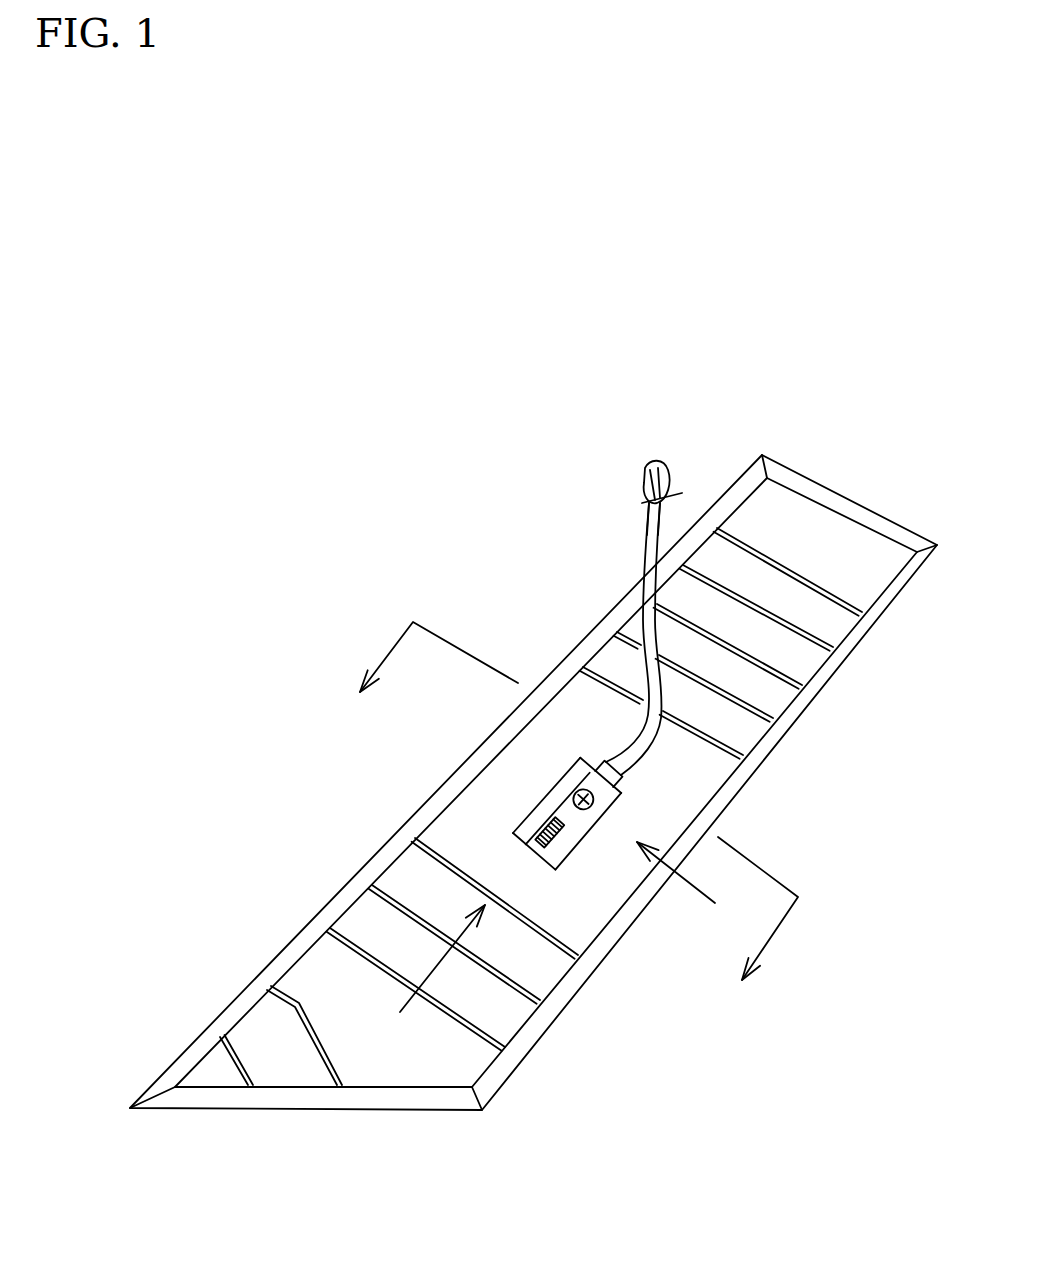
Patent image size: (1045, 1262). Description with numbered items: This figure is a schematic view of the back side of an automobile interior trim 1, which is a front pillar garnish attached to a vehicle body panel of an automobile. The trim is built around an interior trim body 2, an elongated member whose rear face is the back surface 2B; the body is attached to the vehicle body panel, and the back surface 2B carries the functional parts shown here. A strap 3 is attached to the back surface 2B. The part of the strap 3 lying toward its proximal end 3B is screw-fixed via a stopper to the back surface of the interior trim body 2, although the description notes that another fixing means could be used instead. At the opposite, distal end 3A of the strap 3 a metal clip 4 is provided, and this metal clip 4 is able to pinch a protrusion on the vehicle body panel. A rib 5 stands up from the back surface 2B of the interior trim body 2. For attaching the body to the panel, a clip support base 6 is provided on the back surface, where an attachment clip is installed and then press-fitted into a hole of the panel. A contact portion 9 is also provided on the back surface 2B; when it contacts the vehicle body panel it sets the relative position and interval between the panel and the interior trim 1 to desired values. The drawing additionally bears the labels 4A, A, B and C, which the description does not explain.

The automobile interior trim 1 is at (715, 380).
The interior trim body 2 is at (733, 802).
The back surface 2B is at (452, 823).
The strap 3 is at (628, 658).
The distal end 3A is at (652, 527).
The proximal end 3B is at (620, 781).
The metal clip 4 is at (637, 472).
The clip holding portion 4A is at (656, 463).
The rib 5 is at (563, 780).
The clip support base 6 is at (558, 884).
The contact portion 9 is at (533, 820).
The section line A- A is at (600, 778).
The direction B is at (431, 979).
The direction C is at (691, 885).